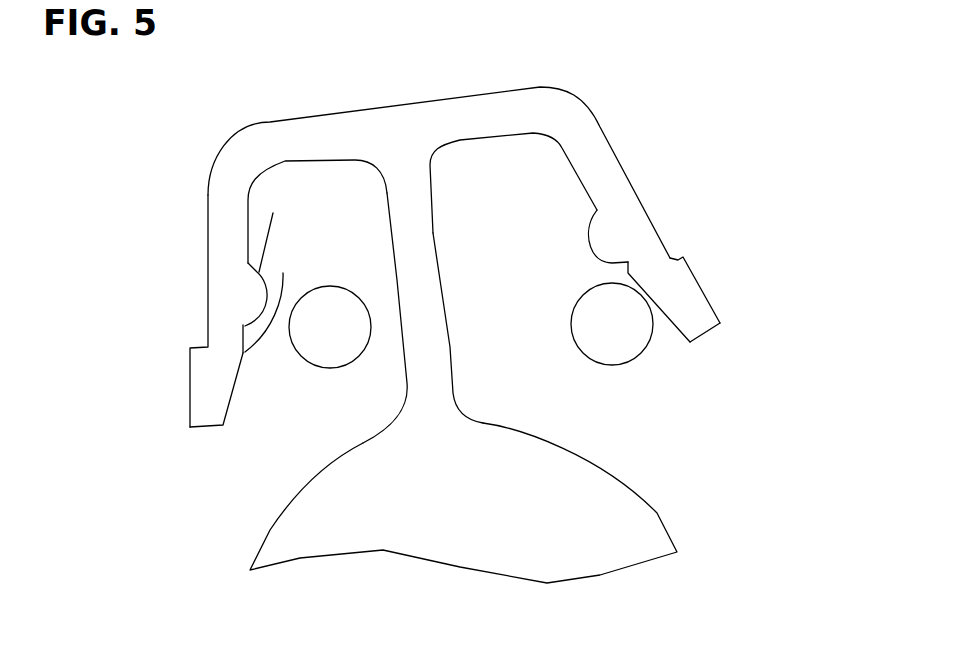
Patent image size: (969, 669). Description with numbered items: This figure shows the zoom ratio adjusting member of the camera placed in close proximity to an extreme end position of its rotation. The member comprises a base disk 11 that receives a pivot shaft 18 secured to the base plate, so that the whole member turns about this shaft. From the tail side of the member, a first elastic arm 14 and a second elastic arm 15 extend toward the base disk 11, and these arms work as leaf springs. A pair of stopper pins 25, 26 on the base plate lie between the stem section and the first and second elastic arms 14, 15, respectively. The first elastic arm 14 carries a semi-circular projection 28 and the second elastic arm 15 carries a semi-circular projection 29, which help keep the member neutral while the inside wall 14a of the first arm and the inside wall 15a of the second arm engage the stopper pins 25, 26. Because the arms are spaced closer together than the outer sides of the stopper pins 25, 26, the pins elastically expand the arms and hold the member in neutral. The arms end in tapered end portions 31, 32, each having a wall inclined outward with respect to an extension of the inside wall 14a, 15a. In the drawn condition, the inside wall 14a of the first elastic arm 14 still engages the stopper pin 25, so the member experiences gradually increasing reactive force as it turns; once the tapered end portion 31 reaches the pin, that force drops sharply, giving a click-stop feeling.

The base disk 11 is at (663, 520).
The first elastic arm 14 is at (653, 247).
The inside wall of first elastic arm 14a is at (628, 273).
The second elastic arm 15 is at (217, 315).
The inside wall of second elastic arm 15a is at (283, 273).
The pivot shaft 18 is at (627, 133).
The stopper pin 25 is at (623, 353).
The stopper pin 26 is at (345, 352).
The semi-circular projection 28 is at (592, 236).
The semi-circular projection 29 is at (273, 213).
The tapered end portion 31 is at (663, 322).
The tapered end portion 32 is at (233, 400).